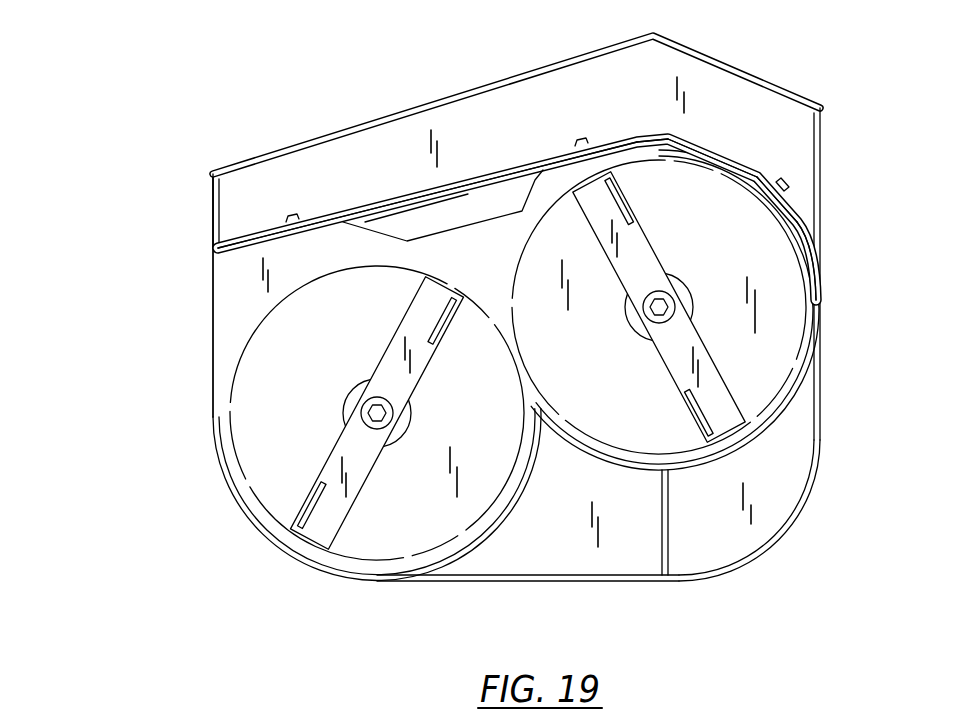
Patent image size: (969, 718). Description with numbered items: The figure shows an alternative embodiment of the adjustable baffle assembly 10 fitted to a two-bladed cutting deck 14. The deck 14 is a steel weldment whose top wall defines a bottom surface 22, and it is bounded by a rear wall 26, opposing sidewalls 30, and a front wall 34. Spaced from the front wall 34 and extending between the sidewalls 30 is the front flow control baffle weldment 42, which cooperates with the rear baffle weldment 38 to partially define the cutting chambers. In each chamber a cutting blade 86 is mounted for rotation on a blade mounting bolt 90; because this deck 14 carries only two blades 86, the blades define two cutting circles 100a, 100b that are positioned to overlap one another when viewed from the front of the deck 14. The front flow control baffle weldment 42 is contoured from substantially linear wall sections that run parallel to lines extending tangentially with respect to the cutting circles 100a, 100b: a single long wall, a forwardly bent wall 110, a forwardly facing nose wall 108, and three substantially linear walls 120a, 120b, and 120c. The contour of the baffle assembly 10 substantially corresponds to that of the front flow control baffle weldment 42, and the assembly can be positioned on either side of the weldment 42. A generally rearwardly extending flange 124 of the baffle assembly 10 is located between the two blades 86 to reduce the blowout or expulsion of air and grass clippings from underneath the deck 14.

The adjustable baffle assembly 10 is at (549, 162).
The cutting deck 14 is at (200, 290).
The bottom surface 22 is at (491, 420).
The rear wall 26 is at (675, 581).
The sidewalls 30 is at (821, 290).
The front wall 34 is at (474, 93).
The rear baffle weldment 38 is at (634, 471).
The front flow control baffle weldment 42 is at (612, 143).
The cutting blade 86 is at (405, 342).
The blade mounting bolt 90 is at (362, 414).
The cutting circle 100a is at (821, 323).
The cutting circle 100b is at (230, 383).
The forwardly facing nose wall 108 is at (655, 137).
The forwardly bent wall 110 is at (212, 203).
The substantially linear wall 120a is at (717, 148).
The substantially linear wall 120b is at (760, 174).
The substantially linear wall 120c is at (801, 223).
The rearwardly extending flange 124 is at (462, 218).